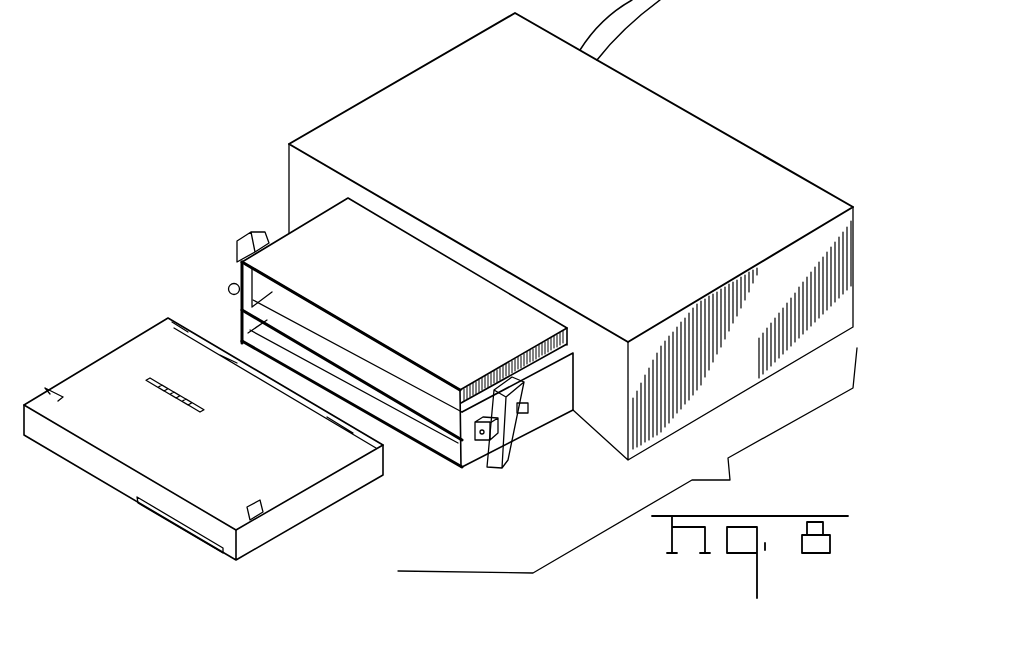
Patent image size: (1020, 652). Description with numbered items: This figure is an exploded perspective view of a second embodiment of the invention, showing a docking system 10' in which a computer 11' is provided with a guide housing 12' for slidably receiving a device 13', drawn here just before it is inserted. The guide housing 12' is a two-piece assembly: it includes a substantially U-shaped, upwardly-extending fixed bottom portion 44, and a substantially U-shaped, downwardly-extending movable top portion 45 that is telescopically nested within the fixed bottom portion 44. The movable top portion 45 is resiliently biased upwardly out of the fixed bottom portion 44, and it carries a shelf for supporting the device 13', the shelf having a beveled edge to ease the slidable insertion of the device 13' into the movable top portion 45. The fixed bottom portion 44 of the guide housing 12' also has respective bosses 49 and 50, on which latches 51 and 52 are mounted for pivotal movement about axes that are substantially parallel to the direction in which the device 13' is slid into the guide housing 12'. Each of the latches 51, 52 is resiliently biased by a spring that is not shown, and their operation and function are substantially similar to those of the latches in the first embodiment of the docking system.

The docking system 10' is at (481, 269).
The computer 11' is at (571, 230).
The guide housing 12' is at (338, 311).
The device 13' is at (203, 439).
The fixed bottom portion 44 is at (550, 400).
The movable top portion 45 is at (328, 280).
The boss 49 is at (229, 289).
The boss 50 is at (486, 437).
The latch 51 is at (243, 243).
The latch 52 is at (509, 424).